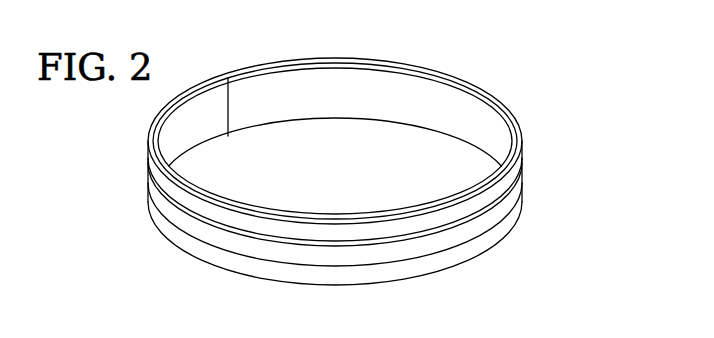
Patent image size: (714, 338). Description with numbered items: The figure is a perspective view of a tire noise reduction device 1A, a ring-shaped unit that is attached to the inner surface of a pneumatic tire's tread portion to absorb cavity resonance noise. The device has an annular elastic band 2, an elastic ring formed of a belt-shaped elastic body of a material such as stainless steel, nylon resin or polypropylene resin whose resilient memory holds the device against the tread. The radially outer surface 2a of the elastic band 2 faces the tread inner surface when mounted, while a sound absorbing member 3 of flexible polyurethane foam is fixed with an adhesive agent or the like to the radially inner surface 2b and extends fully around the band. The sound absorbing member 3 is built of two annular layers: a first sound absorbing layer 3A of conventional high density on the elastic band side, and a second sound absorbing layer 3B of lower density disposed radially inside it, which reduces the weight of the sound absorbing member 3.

The tire noise reduction device 1A is at (481, 72).
The annular elastic band 2 is at (532, 181).
The radially outer surface of the elastic band 2a is at (512, 210).
The radially inner surface of the elastic band 2b is at (444, 228).
The sound absorbing member 3 is at (510, 97).
The first sound absorbing layer 3A is at (444, 69).
The second sound absorbing layer 3B is at (393, 119).